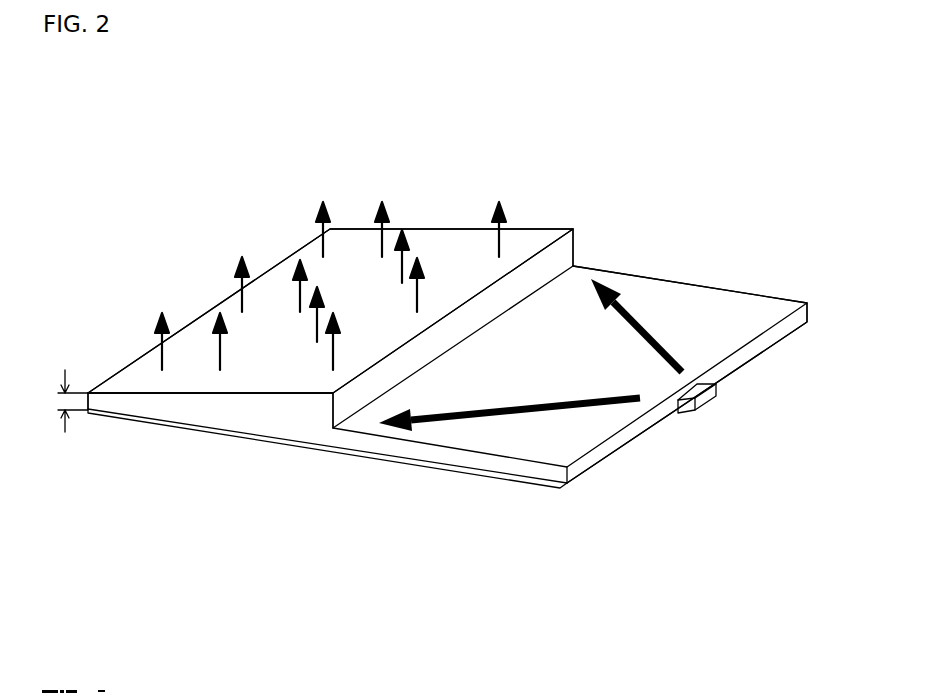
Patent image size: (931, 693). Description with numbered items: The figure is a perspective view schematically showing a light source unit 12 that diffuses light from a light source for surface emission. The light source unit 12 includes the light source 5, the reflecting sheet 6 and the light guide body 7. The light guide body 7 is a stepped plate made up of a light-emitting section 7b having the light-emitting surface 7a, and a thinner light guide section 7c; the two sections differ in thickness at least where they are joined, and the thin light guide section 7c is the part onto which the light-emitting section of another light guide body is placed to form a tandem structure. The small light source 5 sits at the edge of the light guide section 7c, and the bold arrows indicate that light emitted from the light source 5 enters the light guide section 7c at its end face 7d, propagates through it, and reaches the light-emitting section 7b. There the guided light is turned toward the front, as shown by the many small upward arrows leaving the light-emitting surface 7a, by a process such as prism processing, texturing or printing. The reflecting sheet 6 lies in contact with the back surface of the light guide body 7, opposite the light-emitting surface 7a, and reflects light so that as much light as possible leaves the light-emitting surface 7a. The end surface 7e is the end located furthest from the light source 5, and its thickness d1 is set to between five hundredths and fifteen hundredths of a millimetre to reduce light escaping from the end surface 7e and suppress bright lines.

The light source unit 12 is at (658, 137).
The light guide body 7 is at (603, 455).
The light-emitting surface 7a is at (465, 237).
The light-emitting section 7b is at (330, 190).
The light guide section 7c is at (804, 298).
The light entrance end face 7d is at (574, 241).
The end surface 7e is at (86, 392).
The reflecting sheet 6 is at (153, 428).
The light source 5 is at (706, 400).
The thickness of the light guide body at its end surface d1 is at (63, 401).